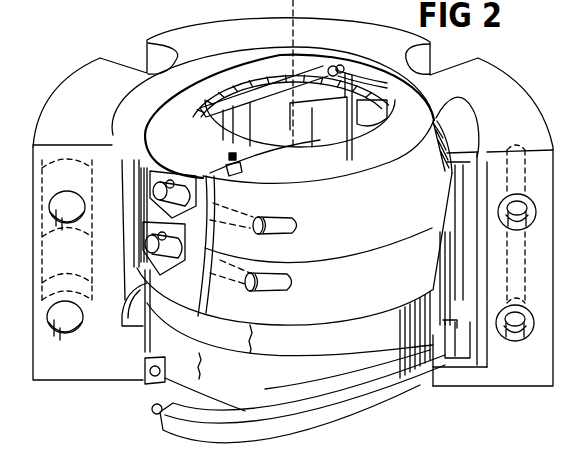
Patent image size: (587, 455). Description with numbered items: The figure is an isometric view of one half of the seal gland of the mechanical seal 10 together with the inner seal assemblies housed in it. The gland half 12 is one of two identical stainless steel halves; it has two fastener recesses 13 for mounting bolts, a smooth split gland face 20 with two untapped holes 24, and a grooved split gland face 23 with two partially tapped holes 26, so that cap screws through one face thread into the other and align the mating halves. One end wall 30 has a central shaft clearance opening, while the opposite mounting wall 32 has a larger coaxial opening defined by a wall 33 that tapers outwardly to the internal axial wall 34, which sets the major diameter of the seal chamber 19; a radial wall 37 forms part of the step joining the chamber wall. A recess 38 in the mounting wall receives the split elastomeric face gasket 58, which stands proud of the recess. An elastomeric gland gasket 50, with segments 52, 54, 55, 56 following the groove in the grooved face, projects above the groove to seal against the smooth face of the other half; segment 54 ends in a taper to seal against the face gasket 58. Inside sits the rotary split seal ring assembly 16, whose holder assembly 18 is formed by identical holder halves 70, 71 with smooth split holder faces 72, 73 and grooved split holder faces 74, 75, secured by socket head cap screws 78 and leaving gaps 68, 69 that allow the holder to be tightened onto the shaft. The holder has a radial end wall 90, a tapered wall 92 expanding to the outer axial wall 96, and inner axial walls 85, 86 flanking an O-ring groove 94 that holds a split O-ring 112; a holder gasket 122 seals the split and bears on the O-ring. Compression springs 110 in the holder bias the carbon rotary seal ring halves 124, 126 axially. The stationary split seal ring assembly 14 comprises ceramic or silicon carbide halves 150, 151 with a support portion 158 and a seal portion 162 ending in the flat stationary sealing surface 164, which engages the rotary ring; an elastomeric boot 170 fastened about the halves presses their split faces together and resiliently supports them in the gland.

The mechanical seal 10 is at (490, 62).
The gland half 12 is at (516, 80).
The fastener recess 13 is at (432, 54).
The stationary split seal ring assembly 14 is at (392, 382).
The rotary split seal ring assembly 16 is at (197, 70).
The holder assembly 18 is at (158, 84).
The seal chamber 19 is at (446, 290).
The smooth split gland face 20 is at (47, 377).
The grooved split gland face 23 is at (550, 385).
The untapped hole 24 is at (72, 330).
The partially tapped hole 26 is at (532, 332).
The end wall 30 is at (77, 380).
The mounting wall 32 is at (547, 128).
The tapered opening wall 33 is at (90, 180).
The internal axial wall 34 is at (130, 293).
The radial wall 37 is at (130, 325).
The recess 38 is at (115, 143).
The gland gasket 50 is at (490, 258).
The gland gasket segment 52 is at (487, 340).
The gland gasket segment 54 is at (516, 211).
The gland gasket segment 55 is at (465, 368).
The gland gasket segment 56 is at (450, 360).
The face gasket 58 is at (463, 123).
The gap 68 is at (206, 234).
The gap 69 is at (343, 132).
The holder half 70 is at (448, 100).
The holder half 71 is at (217, 58).
The smooth split holder face 72 is at (222, 198).
The smooth split holder face 73 is at (368, 70).
The grooved split holder face 74 is at (230, 157).
The grooved split holder face 75 is at (370, 120).
The socket head cap screw 78 is at (169, 223).
The inner axial wall 85 is at (200, 121).
The inner axial wall 86 is at (250, 80).
The radial end wall 90 is at (326, 182).
The tapered wall 92 is at (428, 170).
The O-ring groove 94 is at (286, 145).
The outer axial wall 96 is at (376, 257).
The compression spring 110 is at (300, 123).
The split O-ring 112 is at (306, 75).
The holder gasket 122 is at (240, 168).
The rotary seal ring half 124 is at (309, 353).
The rotary seal ring half 126 is at (226, 343).
The stationary seal ring half 150 is at (234, 381).
The stationary seal ring half 151 is at (198, 370).
The support portion 158 is at (267, 390).
The seal portion 162 is at (398, 346).
The stationary sealing surface 164 is at (298, 362).
The boot 170 is at (328, 428).